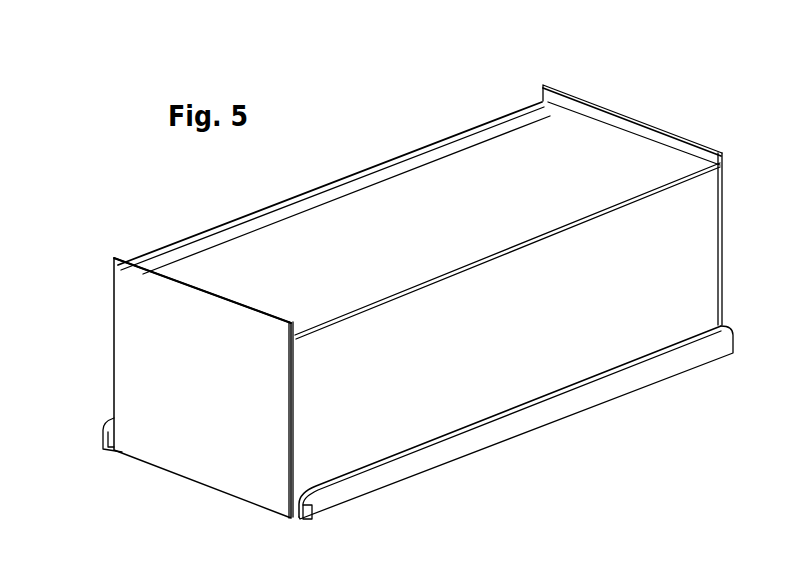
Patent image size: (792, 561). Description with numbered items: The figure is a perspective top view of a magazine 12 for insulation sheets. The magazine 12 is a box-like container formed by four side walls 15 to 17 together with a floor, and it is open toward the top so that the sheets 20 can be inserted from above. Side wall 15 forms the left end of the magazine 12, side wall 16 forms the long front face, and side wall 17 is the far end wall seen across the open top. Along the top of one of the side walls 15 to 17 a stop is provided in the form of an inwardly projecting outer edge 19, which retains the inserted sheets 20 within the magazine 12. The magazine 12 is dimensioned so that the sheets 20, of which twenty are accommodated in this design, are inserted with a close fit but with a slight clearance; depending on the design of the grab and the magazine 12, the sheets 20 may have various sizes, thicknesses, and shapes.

The magazine 12 is at (557, 424).
The side wall 15 is at (190, 417).
The side wall 16 is at (390, 392).
The side wall 17 is at (677, 123).
The inwardly projecting outer edge 19 is at (203, 243).
The sheets 20 is at (353, 220).